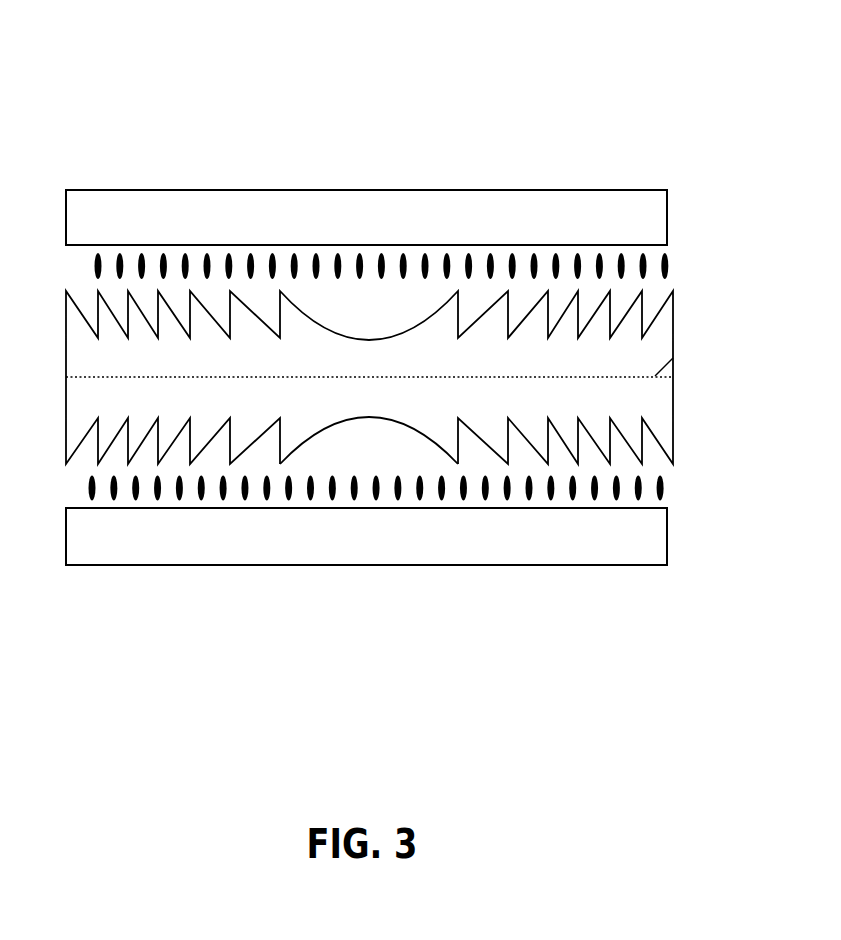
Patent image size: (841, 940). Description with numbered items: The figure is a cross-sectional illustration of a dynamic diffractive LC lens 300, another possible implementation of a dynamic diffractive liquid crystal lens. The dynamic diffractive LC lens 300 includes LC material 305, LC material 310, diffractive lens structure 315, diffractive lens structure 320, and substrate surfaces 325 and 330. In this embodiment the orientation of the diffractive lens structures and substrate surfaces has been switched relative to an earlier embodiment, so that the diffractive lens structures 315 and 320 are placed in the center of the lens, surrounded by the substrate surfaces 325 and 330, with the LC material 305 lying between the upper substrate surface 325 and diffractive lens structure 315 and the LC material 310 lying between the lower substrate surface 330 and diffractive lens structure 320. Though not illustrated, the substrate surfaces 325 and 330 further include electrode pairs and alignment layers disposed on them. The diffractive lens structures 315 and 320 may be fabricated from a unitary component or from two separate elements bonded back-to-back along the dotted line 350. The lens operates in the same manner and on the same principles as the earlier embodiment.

The dynamic diffractive LC lens 300 is at (663, 75).
The LC material 305 is at (362, 318).
The LC material 310 is at (382, 458).
The diffractive lens structure 315 is at (297, 366).
The diffractive lens structure 320 is at (413, 413).
The substrate surface 325 is at (74, 251).
The substrate surface 330 is at (74, 505).
The dotted line 350 is at (657, 375).